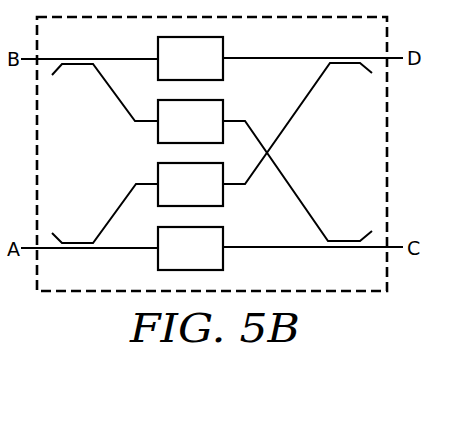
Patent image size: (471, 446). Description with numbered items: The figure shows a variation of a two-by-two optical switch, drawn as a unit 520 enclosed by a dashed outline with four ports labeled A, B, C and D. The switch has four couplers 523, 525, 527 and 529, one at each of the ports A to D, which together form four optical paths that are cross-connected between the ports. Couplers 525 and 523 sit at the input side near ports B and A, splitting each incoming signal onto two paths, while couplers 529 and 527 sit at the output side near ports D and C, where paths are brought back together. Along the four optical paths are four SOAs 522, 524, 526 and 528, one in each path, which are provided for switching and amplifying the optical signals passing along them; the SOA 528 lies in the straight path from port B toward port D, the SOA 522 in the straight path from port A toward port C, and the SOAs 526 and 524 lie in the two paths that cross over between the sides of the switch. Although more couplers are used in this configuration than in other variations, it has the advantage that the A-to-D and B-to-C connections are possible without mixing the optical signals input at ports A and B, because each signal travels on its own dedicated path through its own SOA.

The optical switch unit (dashed enclosure) 520 is at (340, 293).
The SOA 522 is at (224, 258).
The coupler 523 is at (80, 241).
The SOA 524 is at (158, 173).
The coupler 525 is at (80, 68).
The SOA 526 is at (225, 110).
The coupler 527 is at (345, 240).
The SOA 528 is at (158, 50).
The coupler 529 is at (345, 65).